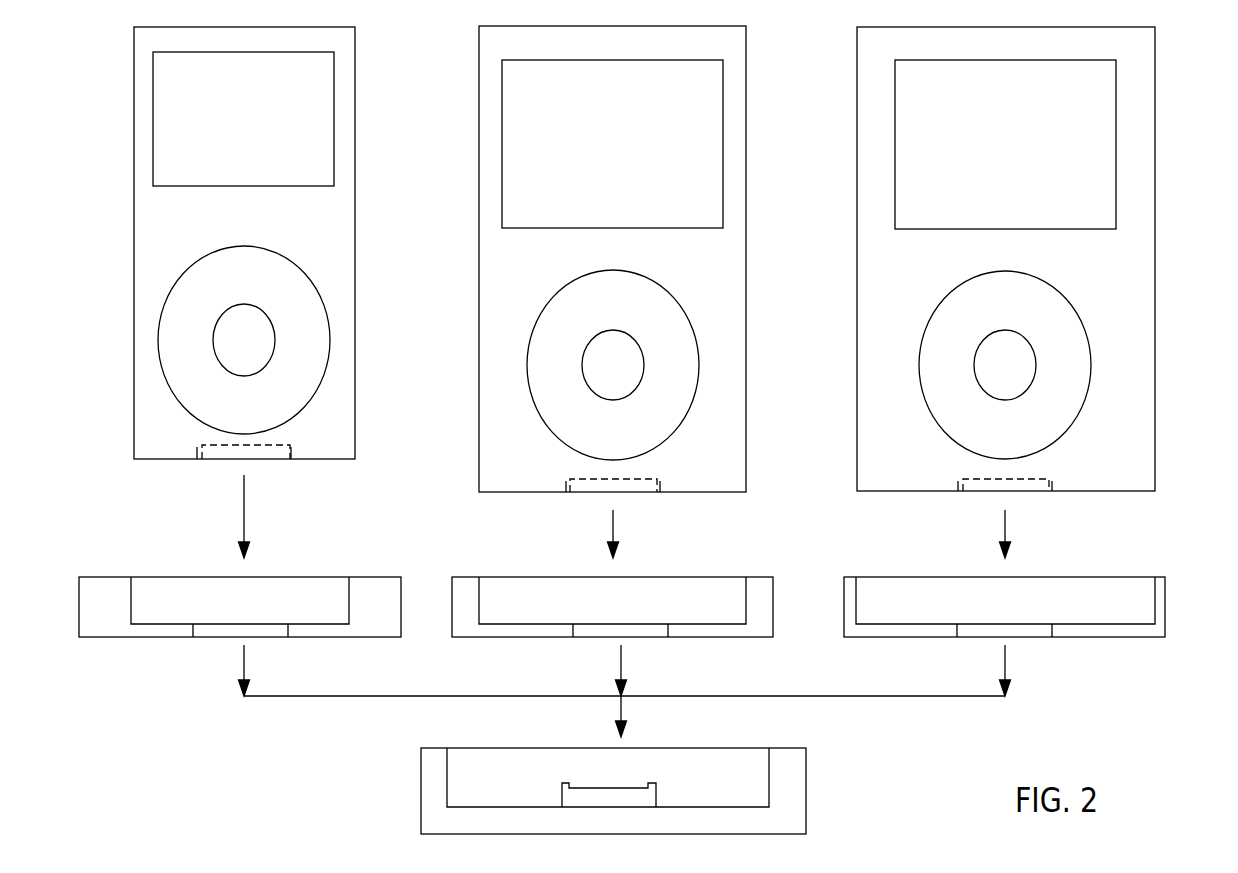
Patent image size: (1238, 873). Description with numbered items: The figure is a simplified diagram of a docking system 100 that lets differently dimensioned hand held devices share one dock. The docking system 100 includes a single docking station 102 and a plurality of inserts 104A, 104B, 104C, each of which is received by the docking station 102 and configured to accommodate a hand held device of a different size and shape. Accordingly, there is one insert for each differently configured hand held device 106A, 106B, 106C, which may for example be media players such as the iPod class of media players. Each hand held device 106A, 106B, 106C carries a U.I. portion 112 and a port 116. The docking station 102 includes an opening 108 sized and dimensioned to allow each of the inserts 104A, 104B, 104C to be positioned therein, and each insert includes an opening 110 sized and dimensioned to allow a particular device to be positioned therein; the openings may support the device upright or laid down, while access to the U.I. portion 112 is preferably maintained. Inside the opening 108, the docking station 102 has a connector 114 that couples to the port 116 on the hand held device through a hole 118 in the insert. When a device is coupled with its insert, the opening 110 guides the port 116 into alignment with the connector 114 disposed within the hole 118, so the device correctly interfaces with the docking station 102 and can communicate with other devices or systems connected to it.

The docking system 100 is at (318, 712).
The docking station 102 is at (807, 783).
The insert 104A is at (401, 577).
The insert 104B is at (773, 577).
The insert 104C is at (1165, 577).
The hand held device 106A is at (355, 277).
The hand held device 106B is at (747, 336).
The hand held device 106C is at (1156, 330).
The opening 108 is at (452, 780).
The opening 110 is at (278, 589).
The U.I. portion 112 is at (335, 208).
The connector 114 is at (653, 780).
The port 116 is at (205, 462).
The hole 118 is at (226, 638).